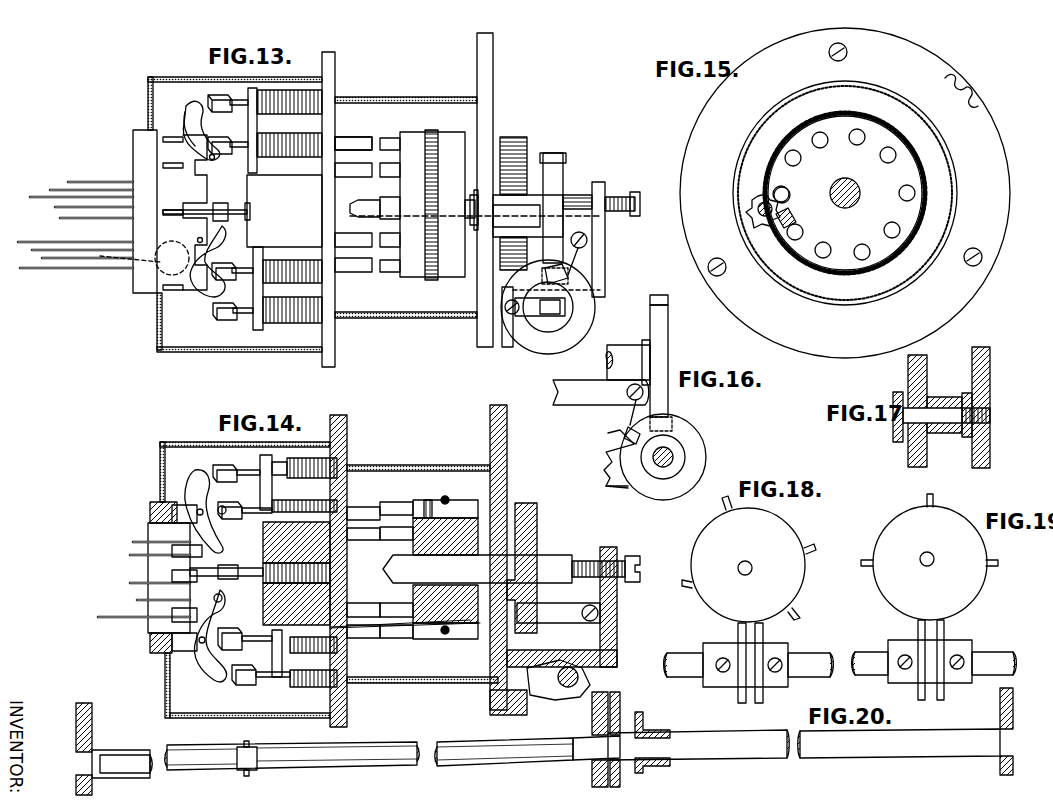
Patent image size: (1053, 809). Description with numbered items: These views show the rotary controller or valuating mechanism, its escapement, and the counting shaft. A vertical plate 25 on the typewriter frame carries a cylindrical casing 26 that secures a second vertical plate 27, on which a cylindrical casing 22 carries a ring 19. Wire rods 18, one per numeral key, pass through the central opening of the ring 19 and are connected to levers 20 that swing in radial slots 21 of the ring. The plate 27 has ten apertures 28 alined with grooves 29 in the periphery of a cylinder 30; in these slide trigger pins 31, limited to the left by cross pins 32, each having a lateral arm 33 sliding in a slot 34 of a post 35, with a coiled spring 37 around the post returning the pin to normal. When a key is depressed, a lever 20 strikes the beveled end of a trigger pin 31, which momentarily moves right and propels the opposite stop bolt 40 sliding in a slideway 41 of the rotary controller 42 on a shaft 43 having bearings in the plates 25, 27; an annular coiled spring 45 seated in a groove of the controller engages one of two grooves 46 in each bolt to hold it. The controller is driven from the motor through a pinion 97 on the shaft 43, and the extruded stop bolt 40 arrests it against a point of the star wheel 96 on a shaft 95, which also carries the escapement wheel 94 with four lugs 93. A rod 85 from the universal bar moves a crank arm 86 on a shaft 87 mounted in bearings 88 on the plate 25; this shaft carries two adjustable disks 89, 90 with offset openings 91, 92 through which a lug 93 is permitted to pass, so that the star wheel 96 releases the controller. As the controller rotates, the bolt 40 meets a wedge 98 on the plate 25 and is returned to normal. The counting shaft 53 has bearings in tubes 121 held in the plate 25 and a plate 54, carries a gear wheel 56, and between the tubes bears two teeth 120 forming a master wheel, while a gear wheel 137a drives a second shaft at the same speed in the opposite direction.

In FIG. 13, the wire rod 18 is at (55, 218).
In FIG. 14, the wire rod 18 is at (140, 558).
In FIG. 13, the ring 19 is at (133, 162).
In FIG. 14, the ring 19 is at (148, 528).
In FIG. 13, the lever 20 is at (185, 128).
In FIG. 14, the lever 20 is at (208, 668).
In FIG. 13, the radial slot 21 is at (172, 165).
In FIG. 14, the radial slot 21 is at (175, 505).
In FIG. 13, the cylindrical casing 22 is at (200, 350).
In FIG. 13, the vertical plate 25 is at (493, 67).
In FIG. 14, the vertical plate 25 is at (507, 472).
In FIG. 17, the vertical plate 25 is at (927, 362).
In FIG. 20, the vertical plate 25 is at (592, 721).
In FIG. 13, the cylindrical casing 26 is at (420, 97).
In FIG. 14, the cylindrical casing 26 is at (438, 465).
In FIG. 15, the cylindrical casing 26 is at (953, 182).
In FIG. 13, the vertical plate 27 is at (335, 358).
In FIG. 14, the vertical plate 27 is at (347, 428).
In FIG. 15, the vertical plate 27 is at (962, 84).
In FIG. 14, the aperture 28 is at (337, 495).
In FIG. 13, the groove 29 is at (255, 178).
In FIG. 14, the groove 29 is at (350, 630).
In FIG. 13, the cylinder 30 is at (284, 211).
In FIG. 14, the cylinder 30 is at (263, 552).
In FIG. 13, the trigger pin 31 is at (350, 140).
In FIG. 14, the trigger pin 31 is at (408, 630).
In FIG. 13, the cross pin 32 is at (348, 172).
In FIG. 14, the cross pin 32 is at (358, 608).
In FIG. 13, the lateral arm 33 is at (246, 126).
In FIG. 14, the lateral arm 33 is at (282, 654).
In FIG. 13, the slot 34 is at (304, 112).
In FIG. 14, the slot 34 is at (310, 660).
In FIG. 13, the post 35 is at (252, 322).
In FIG. 14, the post 35 is at (282, 678).
In FIG. 13, the coiled spring 37 is at (292, 280).
In FIG. 14, the coiled spring 37 is at (326, 655).
In FIG. 13, the stop bolt 40 is at (396, 270).
In FIG. 14, the stop bolt 40 is at (425, 640).
In FIG. 15, the stop bolt 40 is at (857, 145).
In FIG. 14, the slideway 41 is at (470, 640).
In FIG. 13, the rotary controller 42 is at (432, 204).
In FIG. 14, the rotary controller 42 is at (413, 548).
In FIG. 15, the rotary controller 42 is at (800, 252).
In FIG. 13, the shaft 43 is at (386, 222).
In FIG. 14, the shaft 43 is at (511, 569).
In FIG. 15, the shaft 43 is at (860, 193).
In FIG. 13, the annular coiled spring 45 is at (432, 280).
In FIG. 14, the annular coiled spring 45 is at (446, 500).
In FIG. 15, the annular coiled spring 45 is at (845, 116).
In FIG. 14, the groove 46 is at (428, 500).
In FIG. 20, the counting shaft 53 is at (175, 772).
In FIG. 20, the plate 54 is at (92, 720).
In FIG. 20, the gear wheel 56 is at (640, 714).
In FIG. 13, the rod 85 is at (601, 239).
In FIG. 14, the rod 85 is at (558, 613).
In FIG. 16, the rod 85 is at (601, 392).
In FIG. 13, the crank arm 86 is at (586, 262).
In FIG. 14, the crank arm 86 is at (578, 628).
In FIG. 16, the crank arm 86 is at (632, 415).
In FIG. 13, the shaft 87 is at (552, 325).
In FIG. 14, the shaft 87 is at (558, 678).
In FIG. 16, the shaft 87 is at (685, 452).
In FIG. 18, the shaft 87 is at (749, 665).
In FIG. 19, the shaft 87 is at (872, 655).
In FIG. 13, the bearing 88 is at (520, 340).
In FIG. 14, the bearing 88 is at (550, 698).
In FIG. 16, the bearing 88 is at (618, 482).
In FIG. 18, the disk 89 is at (763, 690).
In FIG. 19, the disk 89 is at (944, 628).
In FIG. 18, the disk 90 is at (738, 690).
In FIG. 19, the disk 90 is at (918, 628).
In FIG. 13, the opening 91 is at (600, 290).
In FIG. 16, the opening 91 is at (675, 425).
In FIG. 18, the opening 91 is at (763, 630).
In FIG. 13, the opening 92 is at (547, 265).
In FIG. 16, the opening 92 is at (622, 440).
In FIG. 18, the opening 92 is at (738, 628).
In FIG. 13, the lug 93 is at (566, 157).
In FIG. 16, the lug 93 is at (668, 310).
In FIG. 17, the lug 93 is at (990, 354).
In FIG. 18, the lug 93 is at (808, 548).
In FIG. 19, the lug 93 is at (866, 565).
In FIG. 13, the escapement wheel 94 is at (563, 183).
In FIG. 16, the escapement wheel 94 is at (668, 347).
In FIG. 17, the escapement wheel 94 is at (990, 396).
In FIG. 18, the escapement wheel 94 is at (748, 565).
In FIG. 19, the escapement wheel 94 is at (930, 563).
In FIG. 13, the shaft 95 is at (470, 234).
In FIG. 15, the shaft 95 is at (760, 196).
In FIG. 16, the shaft 95 is at (628, 362).
In FIG. 17, the shaft 95 is at (948, 424).
In FIG. 18, the shaft 95 is at (752, 571).
In FIG. 19, the shaft 95 is at (934, 558).
In FIG. 13, the star wheel 96 is at (468, 215).
In FIG. 15, the star wheel 96 is at (752, 222).
In FIG. 17, the star wheel 96 is at (896, 440).
In FIG. 13, the pinion 97 is at (512, 140).
In FIG. 14, the pinion 97 is at (537, 534).
In FIG. 13, the wedge 98 is at (477, 240).
In FIG. 15, the wedge 98 is at (796, 216).
In FIG. 20, the tooth 120 is at (246, 776).
In FIG. 20, the tube 121 is at (412, 768).
In FIG. 20, the gear wheel 137a is at (620, 778).